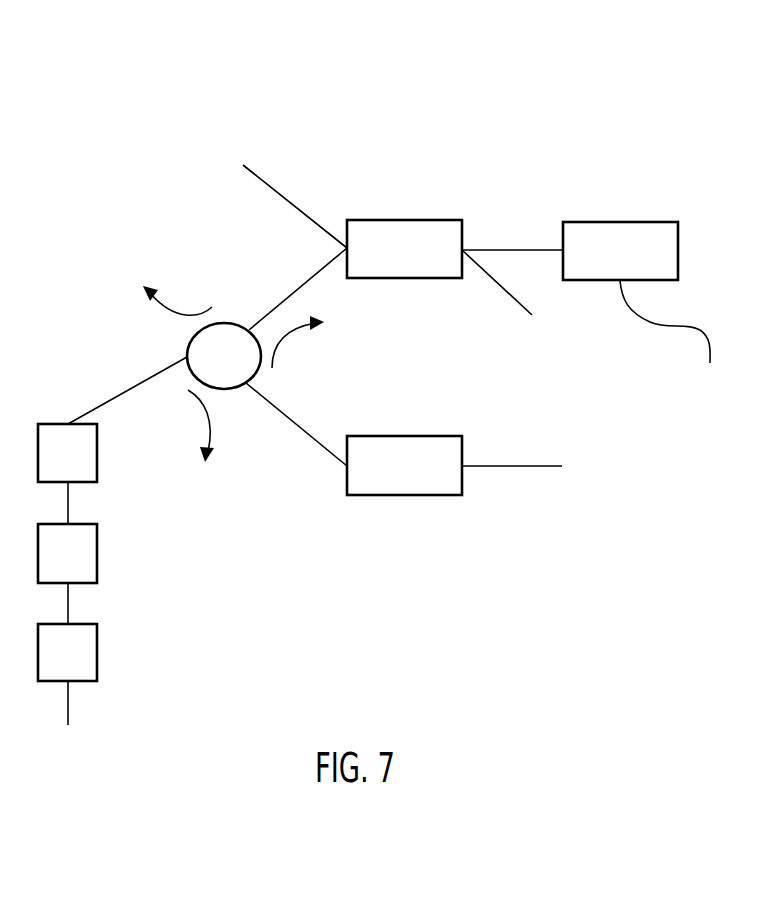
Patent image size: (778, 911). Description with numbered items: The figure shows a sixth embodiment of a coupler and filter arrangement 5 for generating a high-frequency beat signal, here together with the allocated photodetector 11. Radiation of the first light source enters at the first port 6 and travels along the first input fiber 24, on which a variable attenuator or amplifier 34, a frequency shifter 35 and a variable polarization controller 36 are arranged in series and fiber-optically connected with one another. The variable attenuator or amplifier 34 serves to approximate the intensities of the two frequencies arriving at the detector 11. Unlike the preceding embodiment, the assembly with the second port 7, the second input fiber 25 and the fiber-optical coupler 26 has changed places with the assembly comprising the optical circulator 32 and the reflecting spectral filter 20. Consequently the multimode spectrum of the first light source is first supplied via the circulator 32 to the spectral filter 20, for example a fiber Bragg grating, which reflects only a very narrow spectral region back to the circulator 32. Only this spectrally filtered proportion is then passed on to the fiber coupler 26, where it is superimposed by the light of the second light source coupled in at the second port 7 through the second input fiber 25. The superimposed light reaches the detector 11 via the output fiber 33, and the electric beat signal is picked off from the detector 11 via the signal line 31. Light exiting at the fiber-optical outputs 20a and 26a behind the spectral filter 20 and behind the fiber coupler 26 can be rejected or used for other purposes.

The coupler and filter arrangement 5 is at (80, 58).
The first port 6 is at (82, 733).
The second port 7 is at (261, 165).
The photodetector 11 is at (632, 263).
The spectral filter 20 is at (417, 480).
The fiber-optical output 20a is at (495, 463).
The first input fiber 24 is at (71, 706).
The second input fiber 25 is at (281, 199).
The fiber-optical coupler 26 is at (417, 262).
The fiber-optical output 26a is at (503, 291).
The signal line 31 is at (703, 331).
The optical circulator 32 is at (237, 370).
The output fiber 33 is at (496, 248).
The variable attenuator or amplifier 34 is at (81, 666).
The frequency shifter 35 is at (81, 567).
The variable polarization controller 36 is at (81, 467).